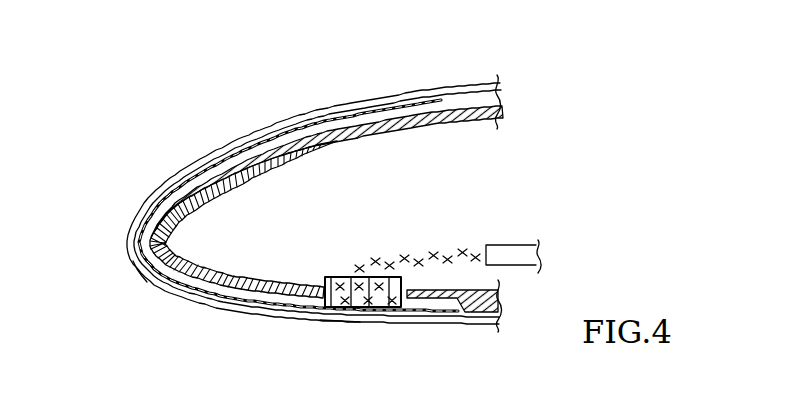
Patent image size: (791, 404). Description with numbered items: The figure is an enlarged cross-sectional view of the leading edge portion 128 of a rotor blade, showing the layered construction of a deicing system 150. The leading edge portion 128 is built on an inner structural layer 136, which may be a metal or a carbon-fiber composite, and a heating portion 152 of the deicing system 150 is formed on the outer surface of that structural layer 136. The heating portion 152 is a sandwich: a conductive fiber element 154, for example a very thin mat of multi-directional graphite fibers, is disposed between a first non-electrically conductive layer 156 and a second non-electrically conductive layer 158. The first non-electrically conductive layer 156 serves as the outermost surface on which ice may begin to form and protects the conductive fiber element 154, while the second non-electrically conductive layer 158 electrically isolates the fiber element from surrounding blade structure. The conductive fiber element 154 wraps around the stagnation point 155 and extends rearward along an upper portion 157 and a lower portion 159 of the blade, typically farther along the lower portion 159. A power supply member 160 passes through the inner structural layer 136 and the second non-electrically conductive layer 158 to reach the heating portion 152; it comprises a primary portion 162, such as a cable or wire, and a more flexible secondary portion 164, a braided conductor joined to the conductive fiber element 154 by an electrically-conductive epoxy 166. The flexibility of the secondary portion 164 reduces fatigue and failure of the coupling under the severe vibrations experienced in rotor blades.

The leading edge portion 128 is at (412, 323).
The inner structural layer 136 is at (327, 148).
The deicing system 150 is at (412, 227).
The heating portion 152 is at (165, 160).
The conductive fiber element 154 is at (443, 98).
The stagnation point 155 is at (143, 278).
The first non-electrically conductive layer 156 is at (357, 100).
The upper portion 157 is at (243, 113).
The second non-electrically conductive layer 158 is at (396, 118).
The lower portion 159 is at (342, 336).
The power supply member 160 is at (573, 208).
The primary portion 162 is at (504, 245).
The secondary portion 164 is at (437, 257).
The electrically-conductive epoxy 166 is at (347, 278).